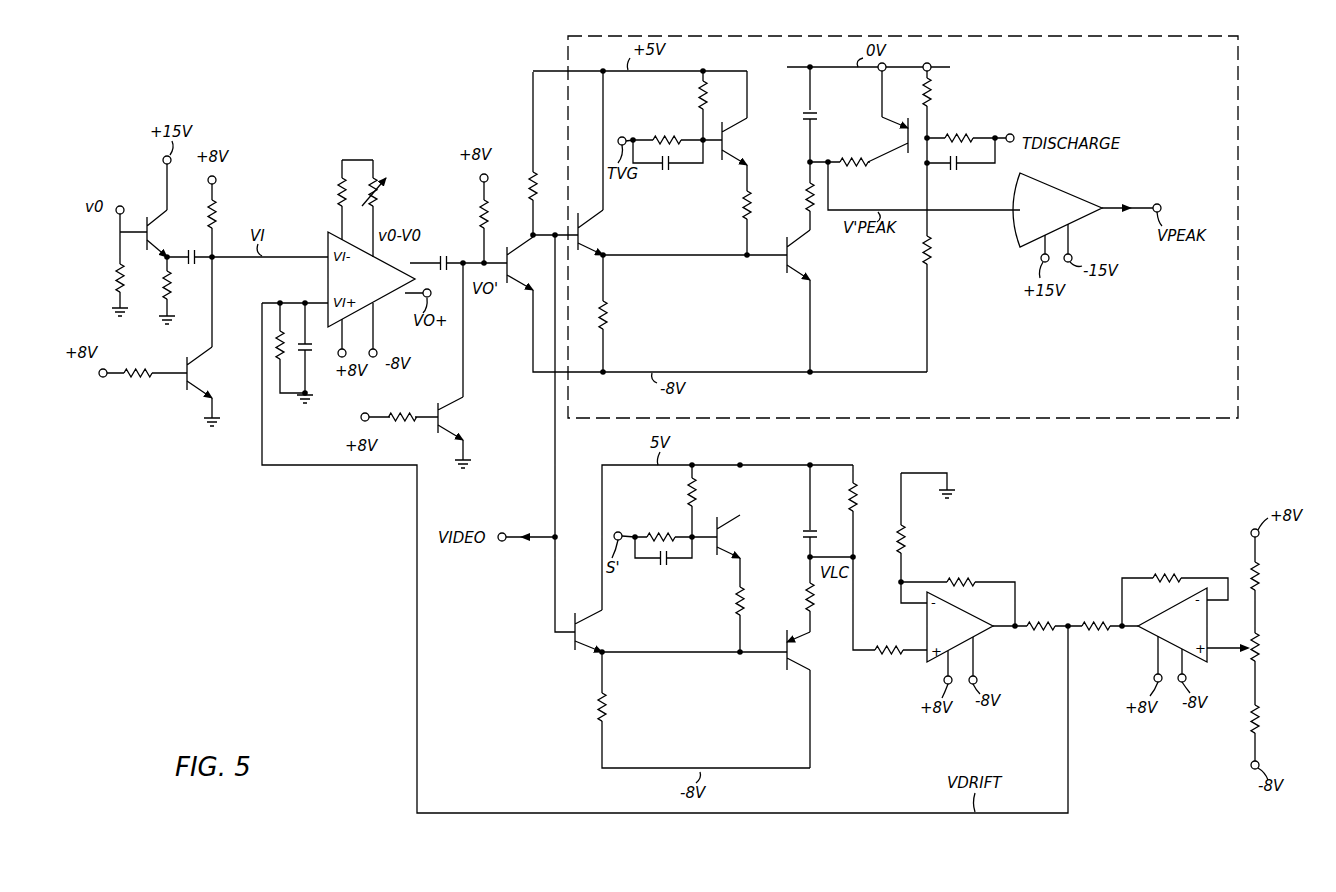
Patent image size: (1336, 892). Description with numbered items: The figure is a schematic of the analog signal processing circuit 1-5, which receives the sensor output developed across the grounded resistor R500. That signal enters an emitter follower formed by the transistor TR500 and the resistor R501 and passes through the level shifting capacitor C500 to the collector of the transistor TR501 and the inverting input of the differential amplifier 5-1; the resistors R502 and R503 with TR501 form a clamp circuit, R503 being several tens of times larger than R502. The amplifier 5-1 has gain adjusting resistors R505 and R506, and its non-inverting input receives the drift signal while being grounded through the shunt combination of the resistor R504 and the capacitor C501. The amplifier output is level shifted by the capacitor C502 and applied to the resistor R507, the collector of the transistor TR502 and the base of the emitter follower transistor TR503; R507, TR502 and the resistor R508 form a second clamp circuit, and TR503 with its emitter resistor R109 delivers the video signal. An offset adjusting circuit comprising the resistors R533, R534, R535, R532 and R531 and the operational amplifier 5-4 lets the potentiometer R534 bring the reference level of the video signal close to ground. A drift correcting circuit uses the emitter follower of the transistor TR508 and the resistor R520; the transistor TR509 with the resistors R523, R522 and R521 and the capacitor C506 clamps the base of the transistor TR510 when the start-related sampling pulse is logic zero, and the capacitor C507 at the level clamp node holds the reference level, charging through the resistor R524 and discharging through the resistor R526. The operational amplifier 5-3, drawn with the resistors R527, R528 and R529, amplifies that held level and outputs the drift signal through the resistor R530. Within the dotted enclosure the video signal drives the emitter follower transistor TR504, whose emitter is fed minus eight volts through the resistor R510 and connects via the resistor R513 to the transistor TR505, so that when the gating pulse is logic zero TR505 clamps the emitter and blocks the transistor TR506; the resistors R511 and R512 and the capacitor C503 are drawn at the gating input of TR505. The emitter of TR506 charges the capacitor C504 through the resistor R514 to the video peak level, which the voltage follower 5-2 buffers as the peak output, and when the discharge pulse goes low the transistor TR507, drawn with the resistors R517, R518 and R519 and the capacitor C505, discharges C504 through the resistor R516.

The transistor TR500 is at (146, 218).
The transistor TR501 is at (217, 372).
The transistor TR502 is at (456, 406).
The emitter follower transistor TR503 is at (505, 283).
The emitter follower transistor TR504 is at (588, 220).
The transistor TR505 is at (733, 147).
The transistor TR506 is at (808, 272).
The transistor TR507 is at (908, 158).
The transistor TR508 is at (594, 618).
The transistor TR509 is at (732, 525).
The transistor TR510 is at (784, 666).
The resistor R500 is at (118, 268).
The resistor R501 is at (165, 285).
The resistor R502 is at (216, 198).
The resistor R503 is at (138, 380).
The resistor R504 is at (278, 340).
The resistor R505 is at (340, 188).
The resistor R506 is at (393, 192).
The resistor R507 is at (482, 215).
The resistor R508 is at (408, 398).
The resistor R109 is at (531, 185).
The resistor R510 is at (612, 312).
The resistor R511 is at (664, 134).
The resistor R512 is at (698, 98).
The resistor R513 is at (748, 213).
The resistor R514 is at (806, 190).
The resistor R516 is at (857, 148).
The resistor R517 is at (934, 94).
The resistor R518 is at (968, 132).
The resistor R519 is at (936, 250).
The resistor R520 is at (595, 714).
The resistor R521 is at (664, 532).
The resistor R522 is at (686, 495).
The resistor R523 is at (736, 604).
The resistor R524 is at (805, 601).
The resistor R526 is at (855, 482).
The resistor R527 is at (884, 656).
The resistor R528 is at (908, 533).
The resistor R529 is at (967, 578).
The resistor R530 is at (1040, 617).
The resistor R531 is at (1095, 636).
The resistor R532 is at (1168, 572).
The resistor R533 is at (1262, 574).
The potentiometer R534 is at (1262, 650).
The resistor R535 is at (1263, 712).
The level shifting capacitor C500 is at (193, 252).
The capacitor C501 is at (308, 360).
The level shifting capacitor C502 is at (448, 255).
The capacitor C503 is at (664, 174).
The capacitor C504 is at (806, 110).
The capacitor C505 is at (957, 172).
The capacitor C506 is at (667, 569).
The capacitor C507 is at (803, 528).
The differential amplifier 5-1 is at (371, 279).
The voltage follower circuit 5-2 is at (1057, 210).
The operational amplifier 5-3 is at (960, 627).
The operational amplifier 5-4 is at (1172, 625).
The analog signal processing circuit 1-5 is at (388, 493).